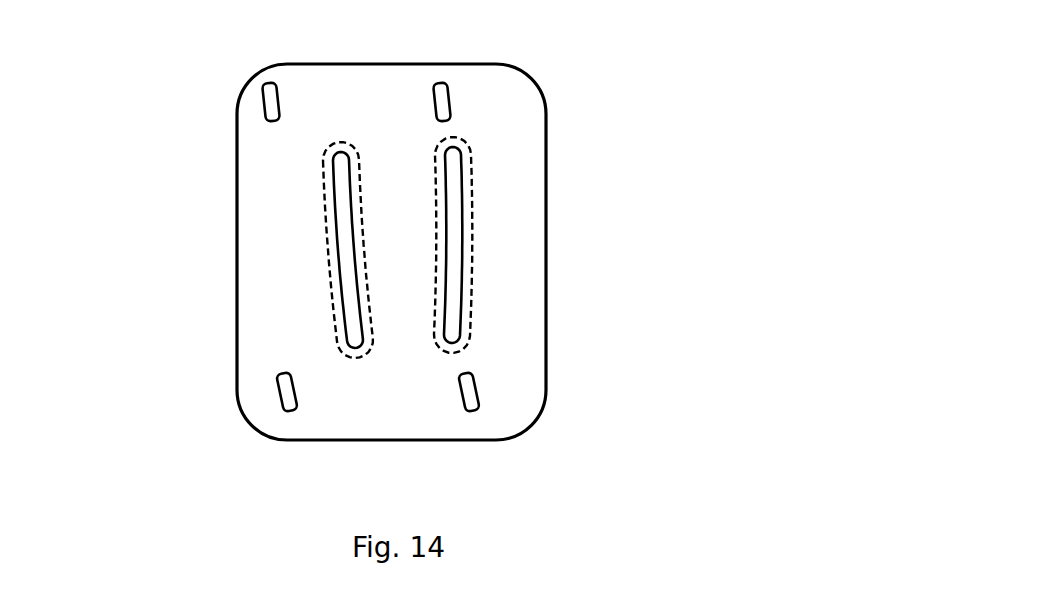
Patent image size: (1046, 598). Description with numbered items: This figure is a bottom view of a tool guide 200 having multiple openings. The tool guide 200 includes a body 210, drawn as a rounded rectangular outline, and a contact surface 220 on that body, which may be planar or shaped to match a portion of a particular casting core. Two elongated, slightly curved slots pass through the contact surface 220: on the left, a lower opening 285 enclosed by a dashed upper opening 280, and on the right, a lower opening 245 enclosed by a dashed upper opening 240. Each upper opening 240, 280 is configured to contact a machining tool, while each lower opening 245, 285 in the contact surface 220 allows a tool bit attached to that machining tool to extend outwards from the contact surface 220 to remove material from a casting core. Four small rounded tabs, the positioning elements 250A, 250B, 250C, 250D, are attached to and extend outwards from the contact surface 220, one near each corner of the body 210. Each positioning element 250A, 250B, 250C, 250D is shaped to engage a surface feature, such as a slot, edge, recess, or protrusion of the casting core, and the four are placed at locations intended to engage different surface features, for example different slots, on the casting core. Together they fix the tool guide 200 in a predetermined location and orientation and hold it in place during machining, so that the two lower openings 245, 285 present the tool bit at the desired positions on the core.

The tool guide 200 is at (695, 52).
The body 210 is at (546, 251).
The contact surface 220 is at (273, 227).
The upper opening 240 is at (472, 252).
The lower opening 245 is at (463, 220).
The positioning element 250A is at (260, 102).
The positioning element 250B is at (277, 387).
The positioning element 250C is at (453, 113).
The positioning element 250D is at (477, 392).
The upper opening 280 is at (328, 303).
The lower opening 285 is at (340, 273).